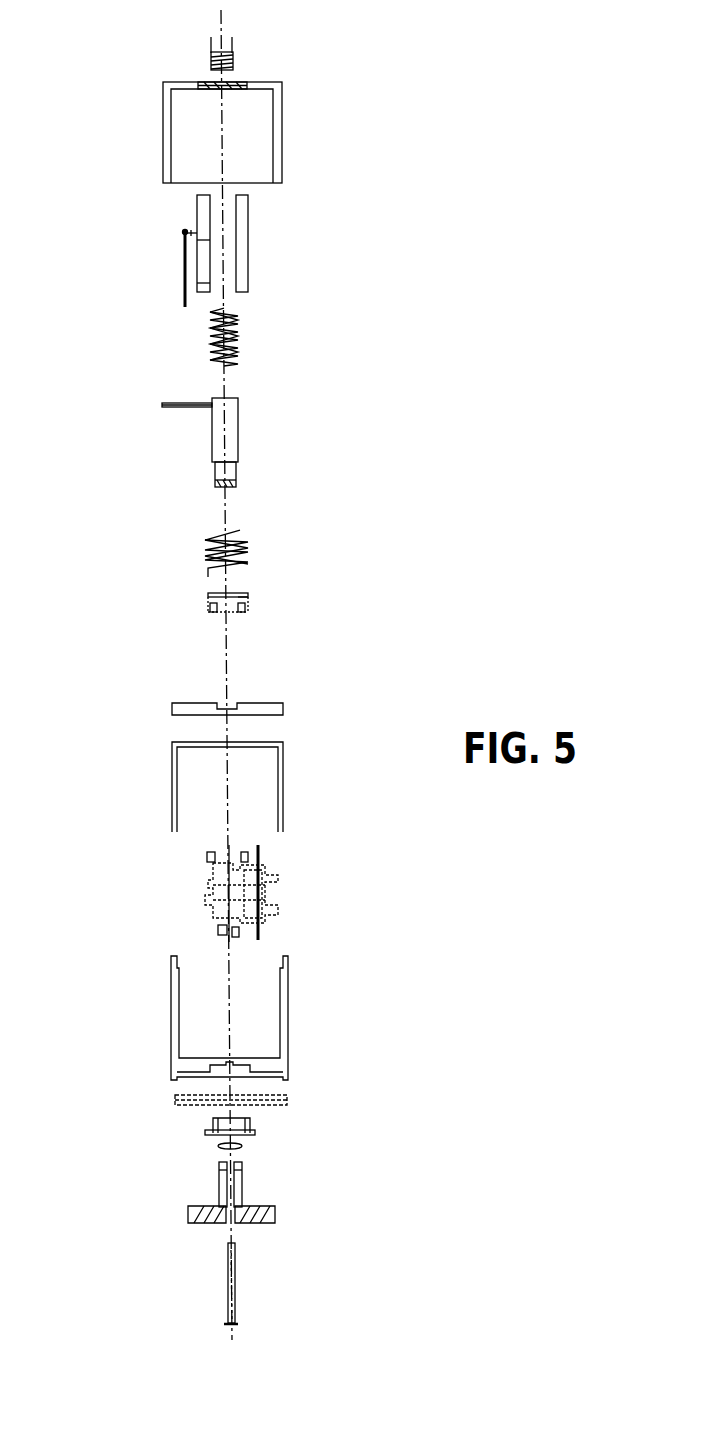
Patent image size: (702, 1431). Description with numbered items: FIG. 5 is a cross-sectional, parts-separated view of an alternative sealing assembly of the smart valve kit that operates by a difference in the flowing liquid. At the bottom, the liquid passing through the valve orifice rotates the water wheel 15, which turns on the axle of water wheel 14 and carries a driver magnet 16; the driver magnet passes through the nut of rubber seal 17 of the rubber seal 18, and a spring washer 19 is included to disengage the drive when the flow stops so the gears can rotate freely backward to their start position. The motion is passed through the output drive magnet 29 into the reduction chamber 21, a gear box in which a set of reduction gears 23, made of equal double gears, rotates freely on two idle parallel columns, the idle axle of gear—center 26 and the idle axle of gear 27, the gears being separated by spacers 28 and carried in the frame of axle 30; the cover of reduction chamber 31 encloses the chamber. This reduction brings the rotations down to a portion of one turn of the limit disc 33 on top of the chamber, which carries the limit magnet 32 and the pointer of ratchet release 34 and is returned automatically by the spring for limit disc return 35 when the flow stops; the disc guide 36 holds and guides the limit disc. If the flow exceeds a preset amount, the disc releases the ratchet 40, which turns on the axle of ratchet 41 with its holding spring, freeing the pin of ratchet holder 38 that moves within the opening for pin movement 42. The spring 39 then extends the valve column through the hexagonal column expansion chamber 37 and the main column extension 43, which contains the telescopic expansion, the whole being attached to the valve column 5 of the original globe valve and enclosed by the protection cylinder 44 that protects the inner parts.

The valve column 5 is at (232, 30).
The protection cylinder 44 is at (163, 123).
The axle of ratchet 41 is at (185, 232).
The opening for pin movement 42 is at (205, 262).
The ratchet 40 is at (183, 296).
The main column extension 43 is at (249, 252).
The spring 39 is at (210, 340).
The pin of ratchet holder 38 is at (163, 407).
The hexagonal column expansion chamber 37 is at (232, 442).
The disc guide 36 is at (215, 472).
The spring for limit disc return 35 is at (218, 537).
The limit disc 33 is at (205, 605).
The pointer of ratchet release 34 is at (250, 595).
The limit magnet 32 is at (243, 612).
The cover of reduction chamber 31 is at (172, 710).
The frame of axle 30 is at (170, 782).
The output drive magnet 29 is at (206, 857).
The idle axle of gear 27 is at (262, 855).
The set of reduction gears 23 is at (225, 892).
The spacers 28 is at (265, 897).
The idle axle of gear—center 26 is at (225, 937).
The reduction chamber 21 is at (170, 1032).
The rubber seal 18 is at (175, 1102).
The nut of rubber seal 17 is at (212, 1127).
The spring washer 19 is at (240, 1147).
The driver magnet 16 is at (218, 1167).
The water wheel 15 is at (188, 1215).
The axle of water wheel 14 is at (226, 1294).